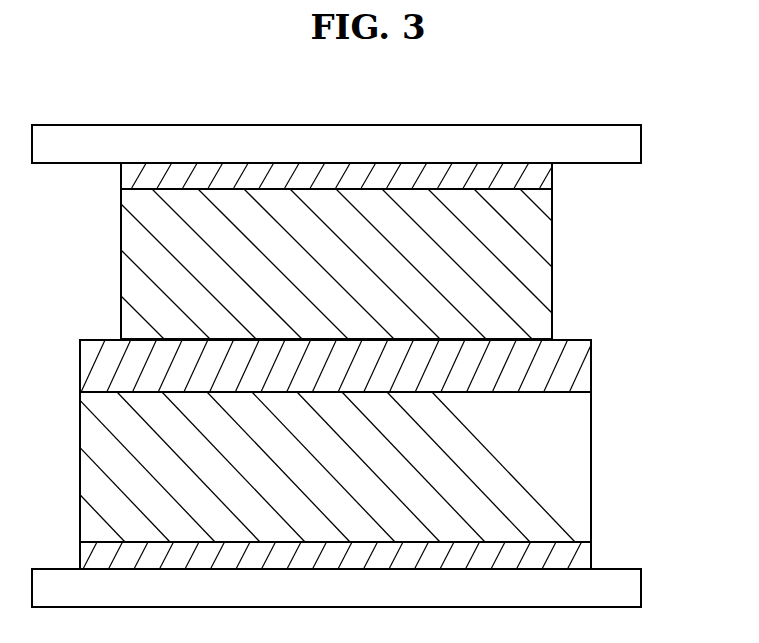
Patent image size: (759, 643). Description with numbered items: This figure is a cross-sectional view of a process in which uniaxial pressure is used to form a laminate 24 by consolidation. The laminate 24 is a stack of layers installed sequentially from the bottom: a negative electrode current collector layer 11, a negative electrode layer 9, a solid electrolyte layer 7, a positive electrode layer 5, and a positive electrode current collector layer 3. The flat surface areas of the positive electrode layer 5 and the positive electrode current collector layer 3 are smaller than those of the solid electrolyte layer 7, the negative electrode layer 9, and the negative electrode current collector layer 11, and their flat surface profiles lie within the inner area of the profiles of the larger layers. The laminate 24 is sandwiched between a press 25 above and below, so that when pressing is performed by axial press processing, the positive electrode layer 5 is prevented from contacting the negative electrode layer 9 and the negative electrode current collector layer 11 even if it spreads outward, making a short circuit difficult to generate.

The press 25 is at (618, 142).
The positive electrode current collector layer 3 is at (542, 175).
The positive electrode layer 5 is at (542, 278).
The solid electrolyte layer 7 is at (578, 364).
The negative electrode layer 9 is at (578, 470).
The negative electrode current collector layer 11 is at (580, 558).
The laminate 24 is at (668, 166).